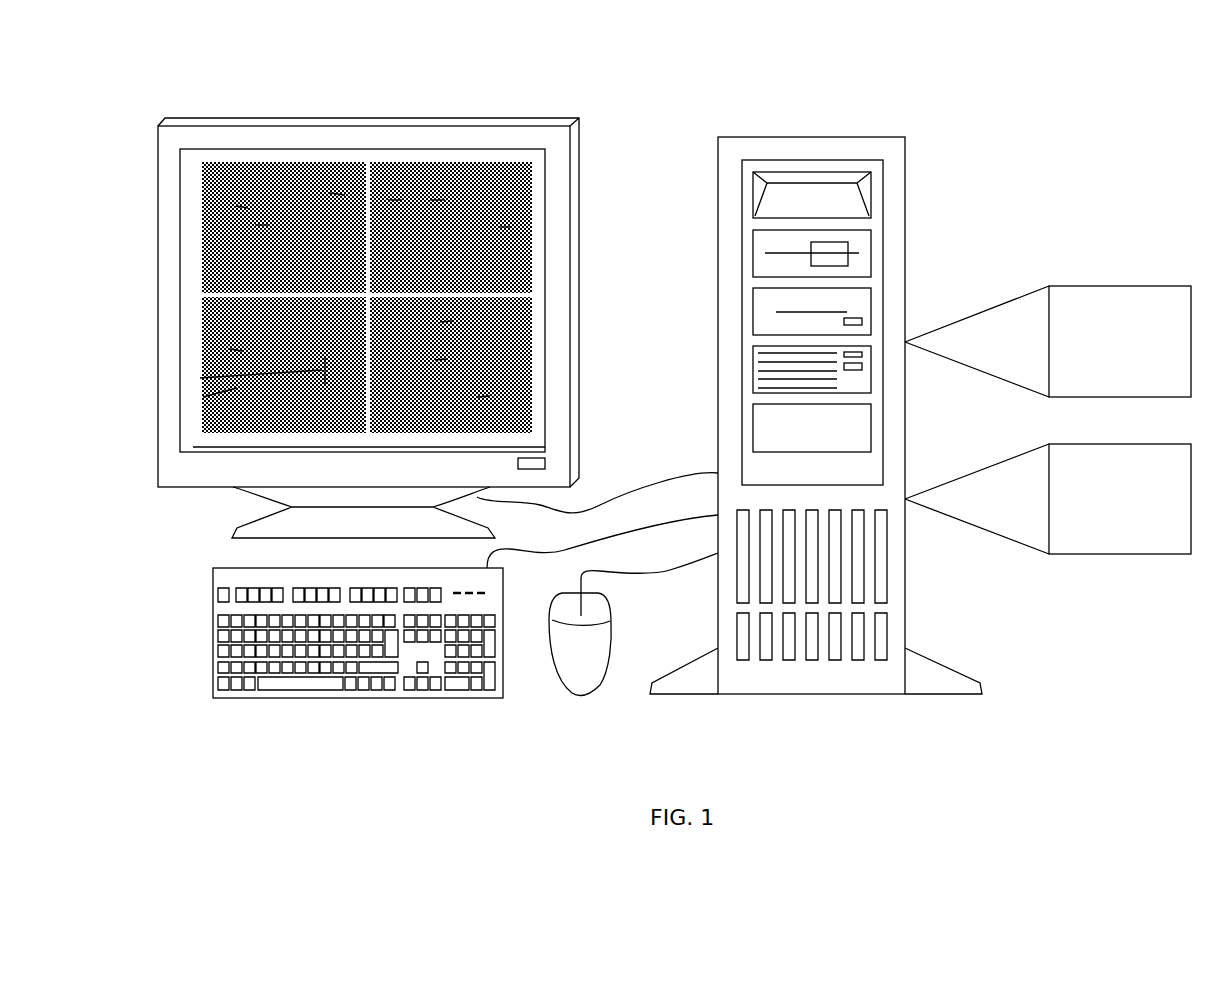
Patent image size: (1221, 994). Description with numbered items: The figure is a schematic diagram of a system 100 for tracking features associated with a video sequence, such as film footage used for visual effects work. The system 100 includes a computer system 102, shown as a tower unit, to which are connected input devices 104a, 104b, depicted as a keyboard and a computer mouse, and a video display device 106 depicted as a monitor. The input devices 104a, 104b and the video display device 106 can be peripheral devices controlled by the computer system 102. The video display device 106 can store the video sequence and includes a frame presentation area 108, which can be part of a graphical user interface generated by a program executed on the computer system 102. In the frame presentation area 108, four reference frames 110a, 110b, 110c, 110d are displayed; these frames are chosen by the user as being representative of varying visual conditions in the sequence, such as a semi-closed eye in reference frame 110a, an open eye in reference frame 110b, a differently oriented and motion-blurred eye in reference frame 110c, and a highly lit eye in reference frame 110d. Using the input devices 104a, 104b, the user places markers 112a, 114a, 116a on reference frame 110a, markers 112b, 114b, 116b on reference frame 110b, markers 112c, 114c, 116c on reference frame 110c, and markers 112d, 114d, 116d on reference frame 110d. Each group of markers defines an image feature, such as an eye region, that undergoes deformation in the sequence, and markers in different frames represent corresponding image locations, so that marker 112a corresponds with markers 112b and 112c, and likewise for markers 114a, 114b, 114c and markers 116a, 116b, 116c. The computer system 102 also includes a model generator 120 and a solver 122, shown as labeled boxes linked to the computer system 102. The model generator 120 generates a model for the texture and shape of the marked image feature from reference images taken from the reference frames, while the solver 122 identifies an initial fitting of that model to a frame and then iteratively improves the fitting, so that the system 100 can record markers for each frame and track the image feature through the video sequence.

The system 100 is at (169, 767).
The computer system 102 is at (985, 694).
The input device 104a is at (503, 698).
The input device 104b is at (583, 695).
The video display device 106 is at (579, 118).
The frame presentation area 108 is at (594, 205).
The reference frame 110a is at (202, 164).
The reference frame 110b is at (527, 165).
The reference frame 110c is at (528, 430).
The reference frame 110d is at (200, 434).
The marker 112a is at (240, 210).
The marker 112b is at (395, 200).
The marker 112c is at (445, 322).
The marker 112d is at (235, 350).
The marker 114a is at (262, 225).
The marker 114b is at (437, 200).
The marker 114c is at (440, 360).
The marker 114d is at (200, 378).
The marker 116a is at (337, 193).
The marker 116b is at (505, 227).
The marker 116c is at (483, 397).
The marker 116d is at (203, 397).
The model generator 120 is at (1048, 341).
The solver 122 is at (1048, 499).